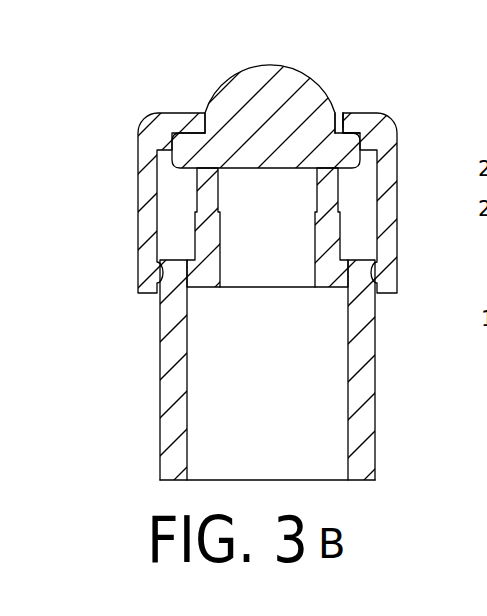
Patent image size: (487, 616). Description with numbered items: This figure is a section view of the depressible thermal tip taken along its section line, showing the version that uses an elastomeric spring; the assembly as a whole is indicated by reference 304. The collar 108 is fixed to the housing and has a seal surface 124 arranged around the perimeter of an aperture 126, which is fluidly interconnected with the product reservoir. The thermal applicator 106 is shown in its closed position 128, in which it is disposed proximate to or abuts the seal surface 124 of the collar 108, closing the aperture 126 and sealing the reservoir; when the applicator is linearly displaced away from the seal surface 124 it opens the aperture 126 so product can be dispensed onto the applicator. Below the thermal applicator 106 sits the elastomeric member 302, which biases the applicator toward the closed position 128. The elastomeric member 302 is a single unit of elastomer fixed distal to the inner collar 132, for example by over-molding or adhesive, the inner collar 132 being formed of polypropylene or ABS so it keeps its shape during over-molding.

The cap assembly 304 is at (183, 43).
The thermal applicator 106 is at (205, 102).
The closed position 128 is at (172, 150).
The collar 108 is at (140, 172).
The aperture 126 is at (333, 110).
The seal surface 124 is at (340, 130).
The elastomeric member 302 is at (338, 190).
The inner collar 132 is at (162, 363).